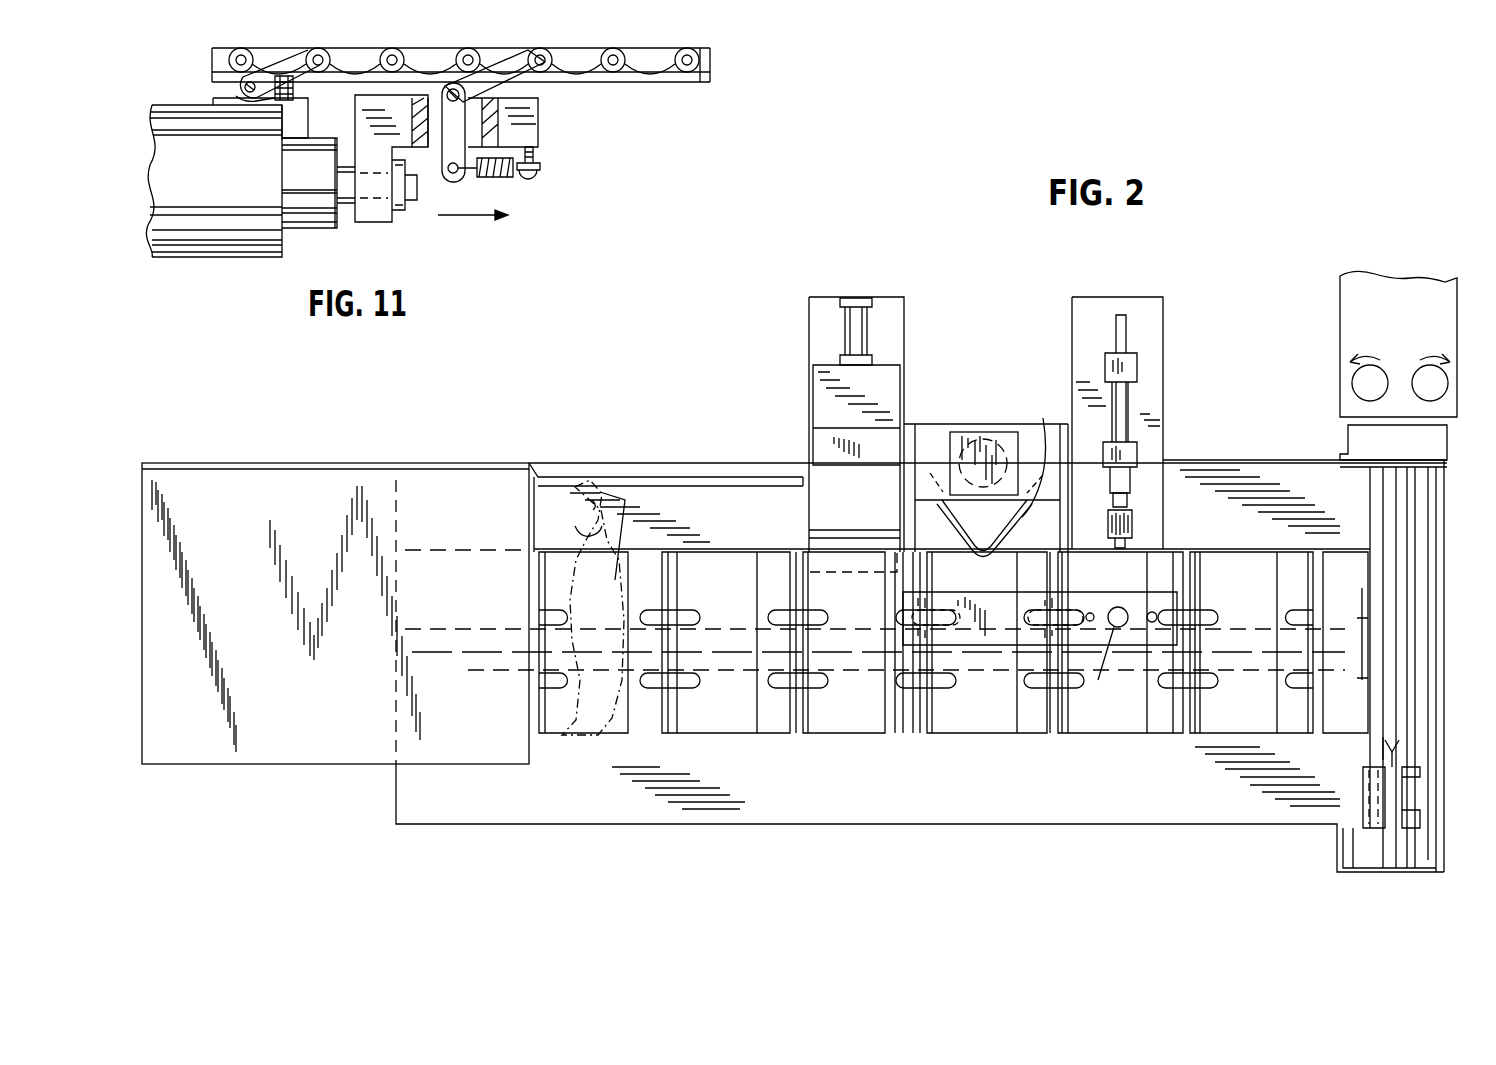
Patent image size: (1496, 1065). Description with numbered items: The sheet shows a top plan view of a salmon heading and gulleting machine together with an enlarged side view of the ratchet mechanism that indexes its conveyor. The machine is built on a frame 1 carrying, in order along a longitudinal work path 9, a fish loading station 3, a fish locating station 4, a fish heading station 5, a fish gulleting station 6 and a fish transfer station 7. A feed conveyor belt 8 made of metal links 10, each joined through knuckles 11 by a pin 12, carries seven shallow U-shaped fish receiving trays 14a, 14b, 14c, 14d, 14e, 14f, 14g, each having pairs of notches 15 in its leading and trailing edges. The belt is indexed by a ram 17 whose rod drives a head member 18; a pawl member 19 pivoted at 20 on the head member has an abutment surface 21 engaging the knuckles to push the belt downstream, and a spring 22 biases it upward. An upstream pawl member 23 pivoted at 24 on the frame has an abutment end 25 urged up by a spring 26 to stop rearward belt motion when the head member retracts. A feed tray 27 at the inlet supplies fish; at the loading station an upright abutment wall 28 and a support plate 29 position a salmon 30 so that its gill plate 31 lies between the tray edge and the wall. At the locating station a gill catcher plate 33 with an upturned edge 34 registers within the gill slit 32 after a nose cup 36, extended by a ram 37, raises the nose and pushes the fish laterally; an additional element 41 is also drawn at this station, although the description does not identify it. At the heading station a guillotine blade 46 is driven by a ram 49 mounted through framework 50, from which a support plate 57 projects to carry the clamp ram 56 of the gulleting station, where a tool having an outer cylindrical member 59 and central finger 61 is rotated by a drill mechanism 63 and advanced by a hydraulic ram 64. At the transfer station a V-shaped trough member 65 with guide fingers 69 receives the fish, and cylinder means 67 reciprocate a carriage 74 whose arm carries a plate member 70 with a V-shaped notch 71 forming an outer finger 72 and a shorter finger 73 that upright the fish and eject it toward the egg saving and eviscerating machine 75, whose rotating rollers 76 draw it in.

In FIG. 2, the frame 1 is at (940, 820).
In FIG. 2, the fish loading station 3 is at (588, 400).
In FIG. 2, the fish locating station 4 is at (870, 270).
In FIG. 2, the fish heading station 5 is at (1006, 406).
In FIG. 2, the fish gulleting station 6 is at (1144, 270).
In FIG. 2, the fish transfer station 7 is at (1467, 552).
In FIG. 11, the feed conveyor belt 8 is at (660, 76).
In FIG. 2, the longitudinal work path 9 is at (445, 650).
In FIG. 11, the metal links 10 is at (360, 48).
In FIG. 11, the knuckles 11 is at (335, 82).
In FIG. 11, the pin 12 is at (323, 48).
In FIG. 2, the fish receiving tray 14a is at (570, 738).
In FIG. 2, the fish receiving tray 14b is at (722, 735).
In FIG. 2, the fish receiving tray 14c is at (830, 735).
In FIG. 2, the fish receiving tray 14d is at (960, 733).
In FIG. 2, the fish receiving tray 14e is at (1108, 733).
In FIG. 2, the fish receiving tray 14f is at (1240, 740).
In FIG. 2, the fish receiving tray 14g is at (1344, 738).
In FIG. 2, the notches 15 is at (556, 624).
In FIG. 11, the ram 17 is at (235, 255).
In FIG. 11, the head member 18 is at (378, 212).
In FIG. 11, the pawl member 19 is at (445, 188).
In FIG. 11, the pivot 20 is at (448, 92).
In FIG. 11, the abutment surface 21 is at (540, 68).
In FIG. 11, the spring 22 is at (518, 178).
In FIG. 11, the pawl member 23 is at (300, 52).
In FIG. 11, the pivot 24 is at (238, 88).
In FIG. 11, the abutment end 25 is at (312, 48).
In FIG. 11, the spring 26 is at (268, 95).
In FIG. 2, the feed tray 27 is at (283, 462).
In FIG. 2, the abutment wall 28 is at (648, 470).
In FIG. 2, the support plate 29 is at (676, 490).
In FIG. 2, the salmon 30 is at (598, 490).
In FIG. 2, the gill plate 31 is at (575, 526).
In FIG. 2, the gill slit 32 is at (606, 545).
In FIG. 2, the gill catcher plate 33 is at (824, 530).
In FIG. 2, the upturned edge 34 is at (852, 532).
In FIG. 2, the nose cup 36 is at (815, 446).
In FIG. 2, the ram 37 is at (848, 328).
In FIG. 2, the press ram 41 is at (812, 382).
In FIG. 2, the guillotine blade 46 is at (1043, 418).
In FIG. 2, the ram 49 is at (958, 440).
In FIG. 2, the framework 50 is at (926, 430).
In FIG. 2, the hydraulic ram 56 is at (1109, 665).
In FIG. 2, the support plate 57 is at (1165, 552).
In FIG. 2, the outer cylindrical member 59 is at (1138, 500).
In FIG. 2, the finger 61 is at (1110, 540).
In FIG. 2, the drill mechanism 63 is at (1140, 462).
In FIG. 2, the hydraulic ram 64 is at (1140, 384).
In FIG. 2, the V-shaped trough member 65 is at (1432, 600).
In FIG. 2, the cylinder means 67 is at (1392, 516).
In FIG. 2, the fingers 69 is at (1361, 678).
In FIG. 2, the plate member 70 is at (1410, 752).
In FIG. 2, the V-shaped notch 71 is at (1400, 738).
In FIG. 2, the outer finger 72 is at (1406, 745).
In FIG. 2, the finger 73 is at (1385, 742).
In FIG. 2, the carriage 74 is at (1408, 820).
In FIG. 2, the egg saving and eviscerating machine 75 is at (1408, 300).
In FIG. 2, the rotating rollers 76 is at (1412, 366).